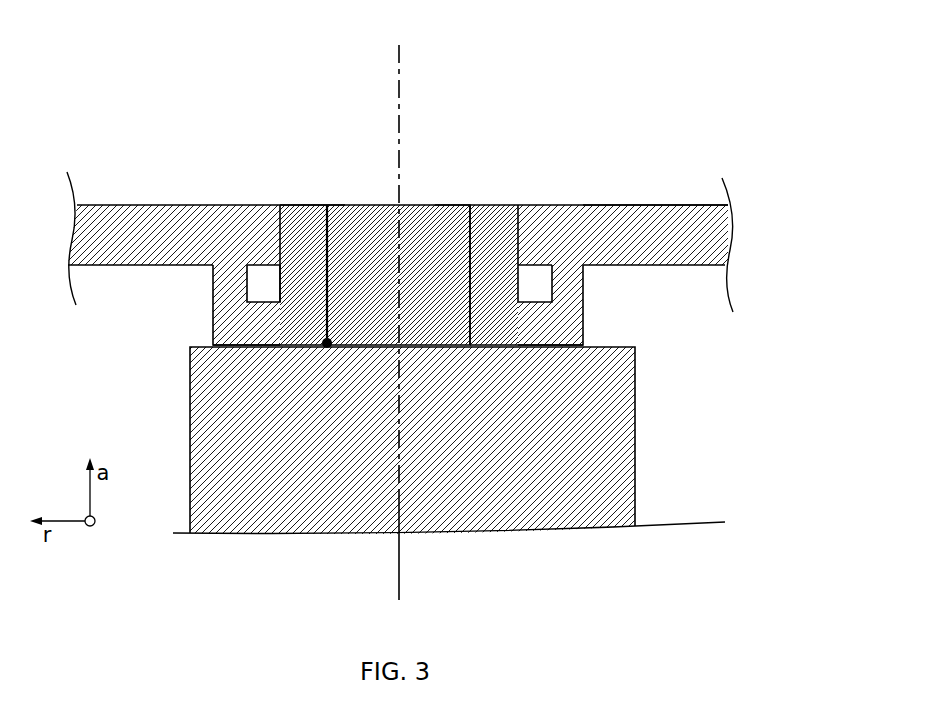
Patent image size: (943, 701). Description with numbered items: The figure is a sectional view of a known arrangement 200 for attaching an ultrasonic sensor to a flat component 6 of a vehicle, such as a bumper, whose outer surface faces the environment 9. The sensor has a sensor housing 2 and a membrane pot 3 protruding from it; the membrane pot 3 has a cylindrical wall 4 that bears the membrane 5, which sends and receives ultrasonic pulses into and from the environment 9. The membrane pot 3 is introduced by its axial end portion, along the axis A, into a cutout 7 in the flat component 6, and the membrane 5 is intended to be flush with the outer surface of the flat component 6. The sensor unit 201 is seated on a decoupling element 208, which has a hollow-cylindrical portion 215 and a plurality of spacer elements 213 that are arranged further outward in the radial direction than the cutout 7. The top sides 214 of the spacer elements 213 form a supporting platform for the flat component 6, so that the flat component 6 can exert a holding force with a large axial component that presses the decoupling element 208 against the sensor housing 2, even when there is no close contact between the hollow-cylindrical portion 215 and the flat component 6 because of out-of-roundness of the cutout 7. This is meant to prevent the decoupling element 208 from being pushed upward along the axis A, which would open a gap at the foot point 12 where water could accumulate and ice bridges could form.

The known arrangement 200 is at (762, 84).
The environment 9 is at (117, 29).
The bolted joint 201 is at (238, 62).
The decoupling element 208 is at (178, 128).
The sensor housing 2 is at (377, 345).
The membrane pot 3 is at (488, 127).
The cylindrical wall 4 is at (487, 205).
The membrane 5 is at (435, 205).
The flat component 6 is at (558, 205).
The cutout 7 is at (535, 205).
The foot point 12 is at (327, 343).
The spacer element 213 is at (247, 284).
The top side 214 is at (233, 266).
The hollow-cylindrical portion 215 is at (345, 205).
The axis A is at (399, 568).